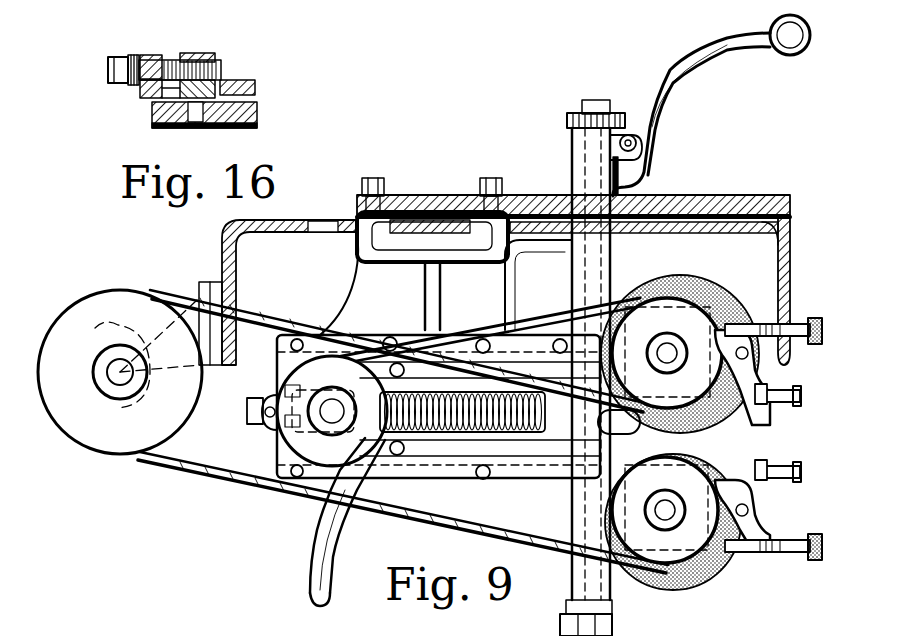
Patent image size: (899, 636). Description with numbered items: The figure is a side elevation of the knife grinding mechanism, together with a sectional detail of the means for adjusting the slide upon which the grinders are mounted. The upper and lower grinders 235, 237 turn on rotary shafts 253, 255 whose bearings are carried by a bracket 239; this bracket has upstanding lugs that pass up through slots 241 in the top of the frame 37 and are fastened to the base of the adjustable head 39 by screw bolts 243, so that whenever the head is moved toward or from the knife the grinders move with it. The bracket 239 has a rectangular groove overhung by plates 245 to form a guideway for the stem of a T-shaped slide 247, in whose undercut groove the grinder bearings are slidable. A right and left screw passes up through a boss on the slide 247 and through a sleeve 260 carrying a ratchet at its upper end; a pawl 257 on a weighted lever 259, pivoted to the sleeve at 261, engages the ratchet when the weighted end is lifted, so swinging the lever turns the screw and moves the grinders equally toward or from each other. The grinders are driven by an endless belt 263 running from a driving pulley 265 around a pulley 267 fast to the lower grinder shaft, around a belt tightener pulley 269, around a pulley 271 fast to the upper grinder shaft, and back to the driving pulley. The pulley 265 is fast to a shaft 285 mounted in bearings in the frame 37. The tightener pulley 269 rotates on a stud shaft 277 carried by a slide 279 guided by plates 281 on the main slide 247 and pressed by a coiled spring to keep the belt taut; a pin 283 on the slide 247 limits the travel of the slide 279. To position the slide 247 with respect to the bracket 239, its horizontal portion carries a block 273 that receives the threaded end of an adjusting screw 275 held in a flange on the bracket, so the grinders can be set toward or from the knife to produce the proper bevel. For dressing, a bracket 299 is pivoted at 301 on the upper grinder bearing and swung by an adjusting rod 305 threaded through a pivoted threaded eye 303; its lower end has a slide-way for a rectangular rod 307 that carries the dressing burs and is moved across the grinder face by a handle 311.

In FIG. 9, the frame 37 is at (270, 219).
In FIG. 9, the adjustable head 39 is at (405, 194).
In FIG. 9, the upper grinder 235 is at (652, 284).
In FIG. 9, the lower grinder 237 is at (690, 580).
In FIG. 16, the bracket 239 is at (149, 55).
In FIG. 9, the bracket 239 is at (377, 283).
In FIG. 9, the slots 241 is at (324, 220).
In FIG. 9, the screw bolts 243 is at (372, 177).
In FIG. 9, the plates 245 is at (292, 345).
In FIG. 16, the slide 247 is at (255, 115).
In FIG. 9, the slide 247 is at (568, 300).
In FIG. 9, the rotary shaft of the upper grinder 253 is at (668, 350).
In FIG. 9, the rotary shaft of the lower grinder 255 is at (573, 112).
In FIG. 9, the pawl 257 is at (648, 118).
In FIG. 9, the weighted lever 259 is at (700, 58).
In FIG. 9, the sleeve 260 is at (600, 140).
In FIG. 9, the pivot 261 is at (638, 143).
In FIG. 9, the endless belt 263 is at (195, 468).
In FIG. 9, the driving pulley 265 is at (78, 430).
In FIG. 9, the pulley 267 is at (712, 562).
In FIG. 9, the belt tightener pulley 269 is at (330, 445).
In FIG. 9, the pulley 271 is at (690, 320).
In FIG. 16, the block 273 is at (199, 53).
In FIG. 16, the adjusting screw 275 is at (130, 84).
In FIG. 9, the adjusting screw 275 is at (250, 408).
In FIG. 9, the stud shaft 277 is at (300, 480).
In FIG. 9, the slide 279 is at (305, 393).
In FIG. 9, the plates 281 is at (260, 468).
In FIG. 9, the pin 283 is at (266, 416).
In FIG. 9, the shaft 285 is at (120, 380).
In FIG. 9, the bracket 299 is at (762, 375).
In FIG. 9, the pivot 301 is at (745, 400).
In FIG. 9, the threaded eye 303 is at (745, 322).
In FIG. 9, the adjusting rod 305 is at (796, 322).
In FIG. 9, the rectangular rod 307 is at (768, 459).
In FIG. 9, the handle 311 is at (802, 400).